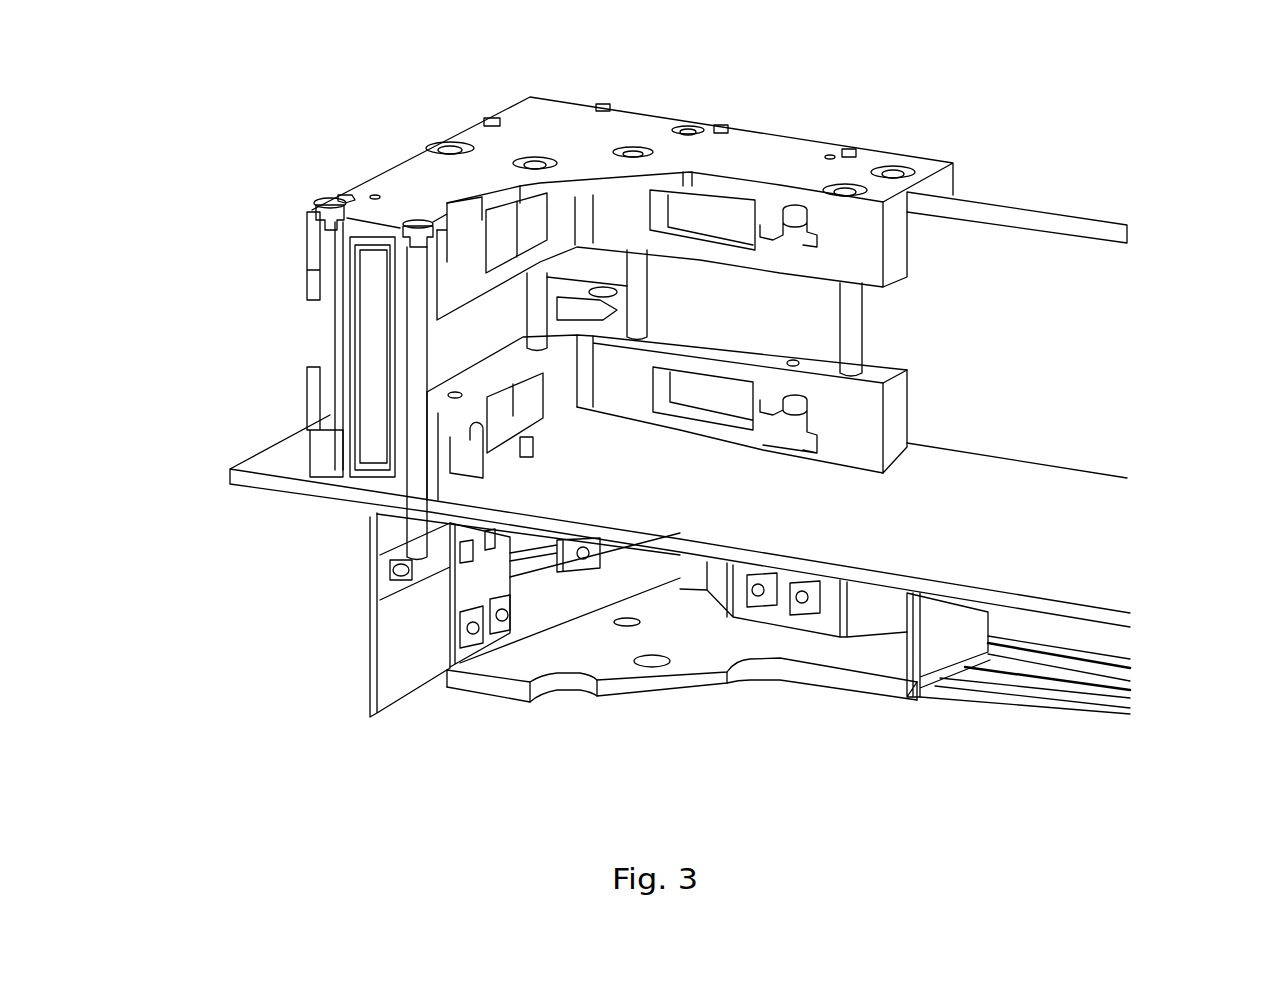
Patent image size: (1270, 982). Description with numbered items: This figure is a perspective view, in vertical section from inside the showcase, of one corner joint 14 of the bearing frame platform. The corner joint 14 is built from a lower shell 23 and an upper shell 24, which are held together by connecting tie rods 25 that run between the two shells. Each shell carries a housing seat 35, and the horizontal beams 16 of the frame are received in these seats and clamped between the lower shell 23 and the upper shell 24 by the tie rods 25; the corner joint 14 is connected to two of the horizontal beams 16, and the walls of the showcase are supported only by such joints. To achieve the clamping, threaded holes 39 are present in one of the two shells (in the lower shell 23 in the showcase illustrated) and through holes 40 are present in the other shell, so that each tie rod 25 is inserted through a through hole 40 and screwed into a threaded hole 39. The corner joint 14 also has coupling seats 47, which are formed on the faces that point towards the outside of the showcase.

The corner joint 14 is at (455, 118).
The horizontal beam 16 is at (1127, 230).
The lower shell 23 is at (900, 408).
The upper shell 24 is at (957, 183).
The connecting tie rod 25 is at (862, 342).
The housing seat 35 is at (372, 477).
The threaded hole 39 is at (333, 428).
The through hole 40 is at (333, 262).
The coupling seat 47 is at (341, 196).